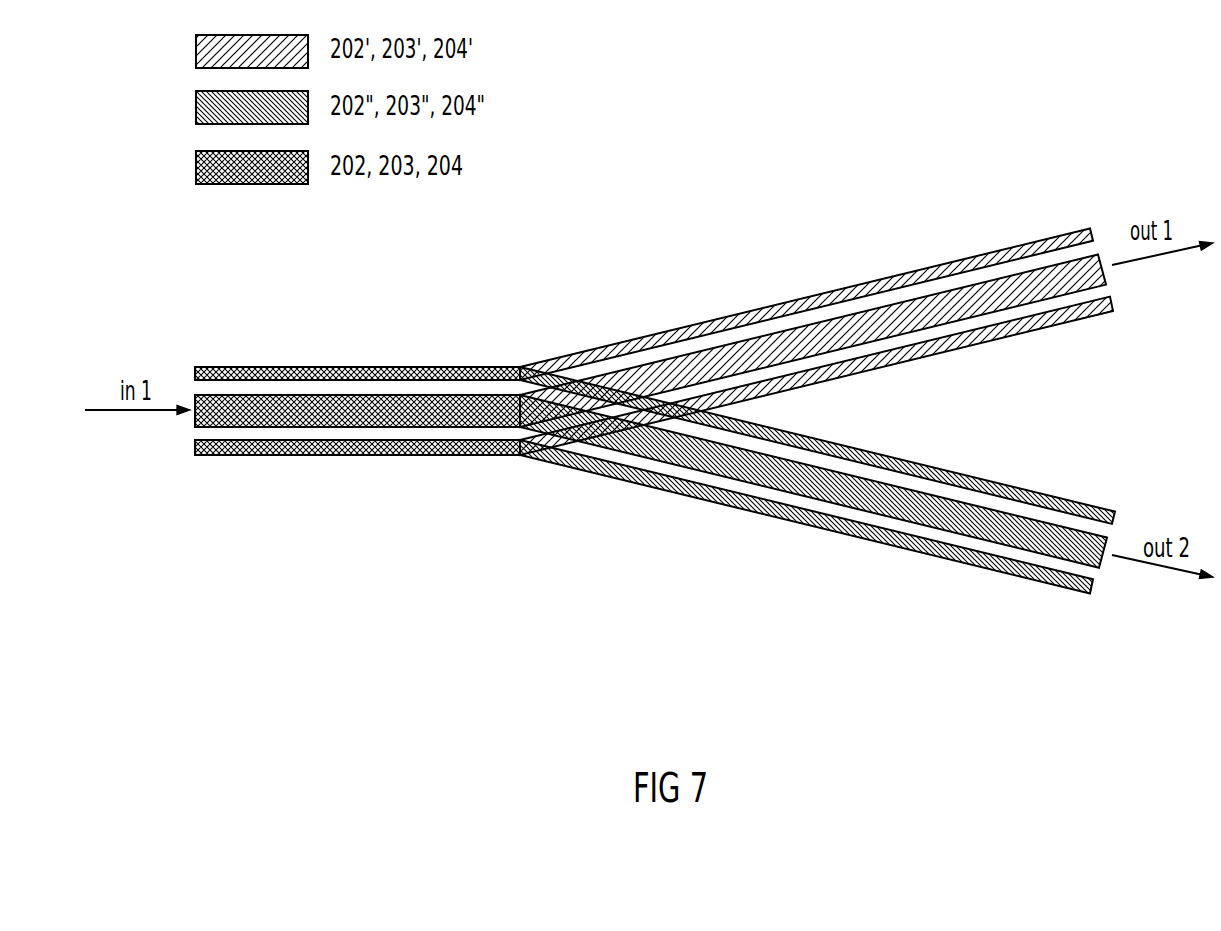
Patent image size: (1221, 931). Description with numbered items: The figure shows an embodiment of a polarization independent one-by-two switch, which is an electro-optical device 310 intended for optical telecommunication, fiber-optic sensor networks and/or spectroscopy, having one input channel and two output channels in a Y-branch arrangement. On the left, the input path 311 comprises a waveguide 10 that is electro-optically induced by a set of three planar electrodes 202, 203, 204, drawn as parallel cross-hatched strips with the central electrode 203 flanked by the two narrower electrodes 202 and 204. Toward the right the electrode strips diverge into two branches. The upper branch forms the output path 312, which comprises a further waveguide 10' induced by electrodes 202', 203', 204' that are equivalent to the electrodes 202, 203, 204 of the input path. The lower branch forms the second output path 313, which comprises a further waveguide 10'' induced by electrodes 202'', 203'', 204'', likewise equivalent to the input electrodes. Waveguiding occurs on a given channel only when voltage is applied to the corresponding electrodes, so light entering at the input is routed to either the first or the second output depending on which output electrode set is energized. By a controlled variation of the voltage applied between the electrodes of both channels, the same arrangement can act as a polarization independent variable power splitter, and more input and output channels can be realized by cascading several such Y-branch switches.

The waveguide 10 is at (434, 644).
The waveguide 10' is at (966, 78).
The waveguide 10'' is at (904, 720).
The electrode 202 is at (357, 331).
The electrode 203 is at (315, 435).
The electrode 204 is at (357, 489).
The electrode 202' is at (806, 266).
The electrode 203' is at (861, 341).
The electrode 204' is at (816, 376).
The electrode 202'' is at (817, 445).
The electrode 203'' is at (850, 511).
The electrode 204'' is at (806, 554).
The electro-optical device 310 is at (852, 213).
The input path 311 is at (337, 554).
The output path 312 is at (1056, 142).
The output path 313 is at (1036, 686).